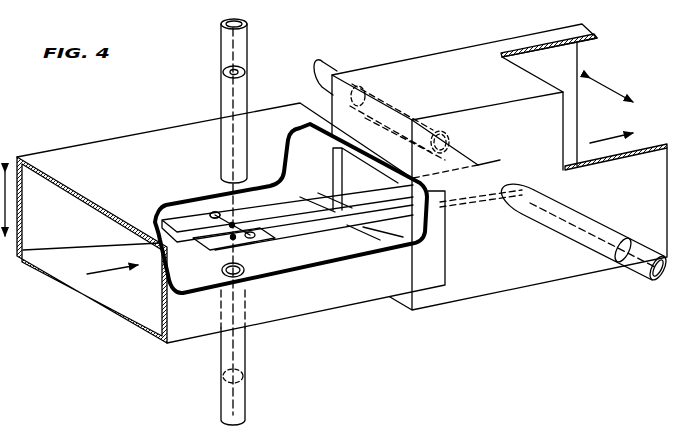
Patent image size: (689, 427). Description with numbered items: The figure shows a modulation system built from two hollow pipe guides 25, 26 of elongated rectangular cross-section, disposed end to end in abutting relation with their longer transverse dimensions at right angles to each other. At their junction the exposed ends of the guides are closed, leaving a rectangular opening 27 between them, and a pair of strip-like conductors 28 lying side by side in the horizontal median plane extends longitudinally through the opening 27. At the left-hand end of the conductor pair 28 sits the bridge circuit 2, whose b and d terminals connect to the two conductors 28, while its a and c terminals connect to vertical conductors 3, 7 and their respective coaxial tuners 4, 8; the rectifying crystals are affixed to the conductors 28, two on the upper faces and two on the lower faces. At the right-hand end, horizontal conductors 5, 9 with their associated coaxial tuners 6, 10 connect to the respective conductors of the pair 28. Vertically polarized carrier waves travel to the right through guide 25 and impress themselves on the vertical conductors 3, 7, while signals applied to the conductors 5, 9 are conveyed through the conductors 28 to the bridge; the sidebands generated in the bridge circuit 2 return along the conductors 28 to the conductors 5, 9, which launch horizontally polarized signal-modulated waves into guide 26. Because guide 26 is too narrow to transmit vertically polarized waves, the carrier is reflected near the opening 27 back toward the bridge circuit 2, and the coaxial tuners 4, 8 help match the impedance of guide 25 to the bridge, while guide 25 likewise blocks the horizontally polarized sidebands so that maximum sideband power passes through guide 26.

The bridge circuit 2 is at (229, 240).
The vertical conductor 3 is at (233, 224).
The coaxial tuner 4 is at (247, 96).
The horizontal conductor 5 is at (522, 190).
The coaxial tuner 6 is at (590, 213).
The vertical conductor 7 is at (222, 267).
The coaxial tuner 8 is at (245, 353).
The horizontal conductor 9 is at (452, 148).
The coaxial tuner 10 is at (337, 67).
The hollow pipe guide 25 is at (140, 138).
The hollow pipe guide 26 is at (442, 57).
The rectangular opening 27 is at (343, 163).
The strip-like conductors 28 is at (287, 200).
The bridge terminal a is at (233, 207).
The bridge terminal c is at (239, 249).